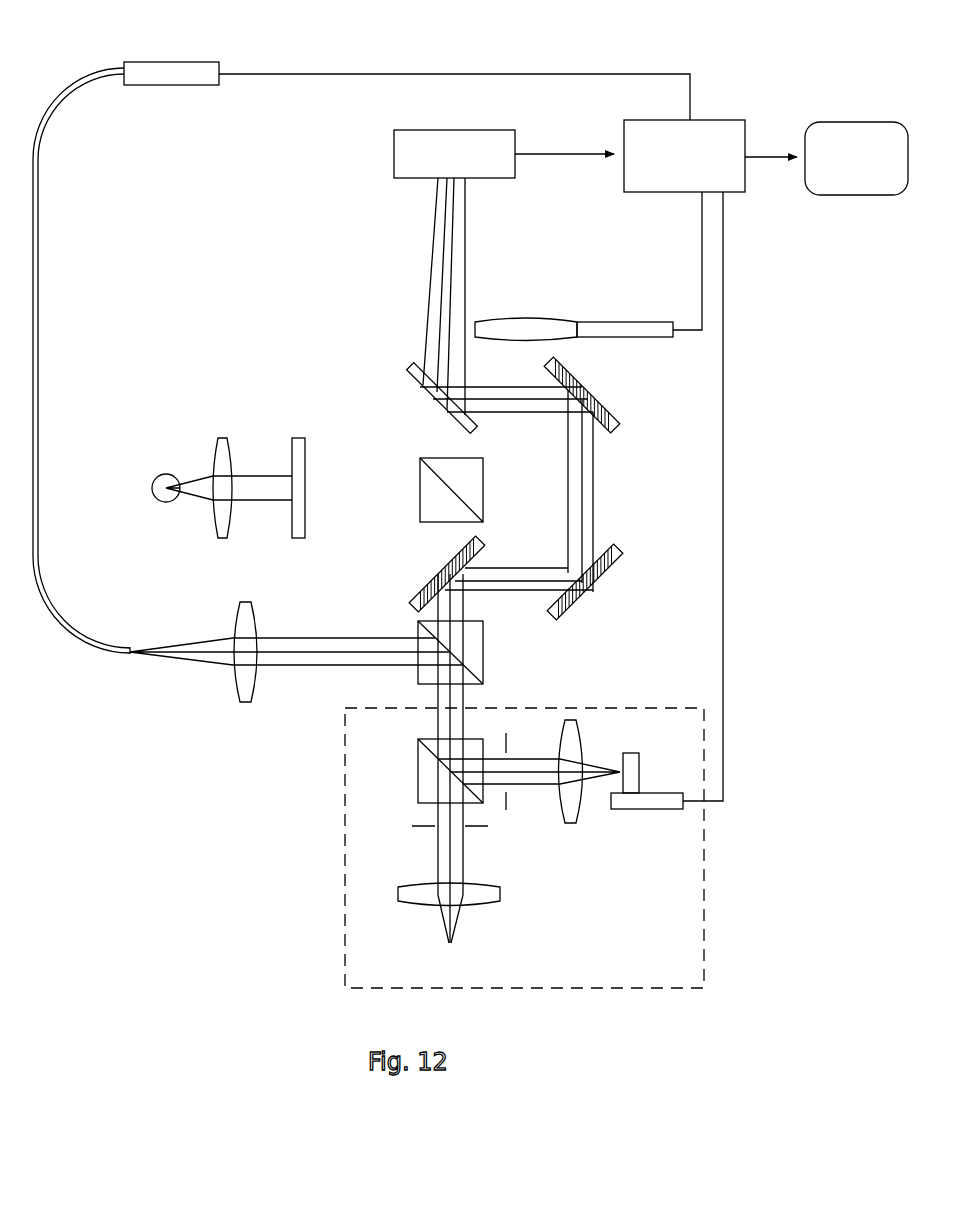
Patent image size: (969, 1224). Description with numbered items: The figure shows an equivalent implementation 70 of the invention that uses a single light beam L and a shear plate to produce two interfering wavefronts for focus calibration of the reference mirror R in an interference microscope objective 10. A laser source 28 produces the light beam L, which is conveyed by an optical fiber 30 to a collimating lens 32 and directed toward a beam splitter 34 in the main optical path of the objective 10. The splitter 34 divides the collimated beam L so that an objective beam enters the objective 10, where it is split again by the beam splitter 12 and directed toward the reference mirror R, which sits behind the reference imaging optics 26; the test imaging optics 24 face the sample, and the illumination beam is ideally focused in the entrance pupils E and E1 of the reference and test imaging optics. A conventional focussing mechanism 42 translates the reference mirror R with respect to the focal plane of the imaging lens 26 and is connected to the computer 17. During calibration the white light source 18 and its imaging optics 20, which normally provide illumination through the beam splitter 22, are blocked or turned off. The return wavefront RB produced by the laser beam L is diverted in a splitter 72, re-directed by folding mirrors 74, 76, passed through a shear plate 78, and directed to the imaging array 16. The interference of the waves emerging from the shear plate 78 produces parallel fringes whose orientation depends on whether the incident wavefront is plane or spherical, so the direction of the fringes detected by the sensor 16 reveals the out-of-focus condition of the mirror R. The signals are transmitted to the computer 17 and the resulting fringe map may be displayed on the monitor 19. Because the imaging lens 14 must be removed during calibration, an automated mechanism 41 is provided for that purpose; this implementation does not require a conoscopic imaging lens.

The laser source 28 is at (175, 67).
The optical fiber 30 is at (40, 360).
The imaging array 16 is at (400, 146).
The computer 17 is at (728, 126).
The monitor 19 is at (832, 126).
The equivalent implementation 70 is at (258, 308).
The imaging optics 14 is at (510, 325).
The automated mechanism 41 is at (630, 325).
The white light source 18 is at (166, 474).
The imaging optics 20 is at (225, 450).
The shear plate 78 is at (430, 400).
The folding mirror 76 is at (618, 395).
The beam splitter 22 is at (480, 480).
The splitter 72 is at (438, 570).
The folding mirror 74 is at (602, 586).
The return wavefront RB is at (455, 605).
The light beam L is at (200, 650).
The collimating lens 32 is at (248, 620).
The beam splitter 34 is at (478, 658).
The interference microscope objective 10 is at (705, 910).
The beam splitter 12 is at (425, 780).
The entrance pupil E is at (509, 750).
The entrance pupil E1 is at (475, 830).
The imaging optics 26 is at (578, 725).
The reference mirror R is at (620, 760).
The focussing mechanism 42 is at (670, 793).
The imaging optics 24 is at (488, 893).